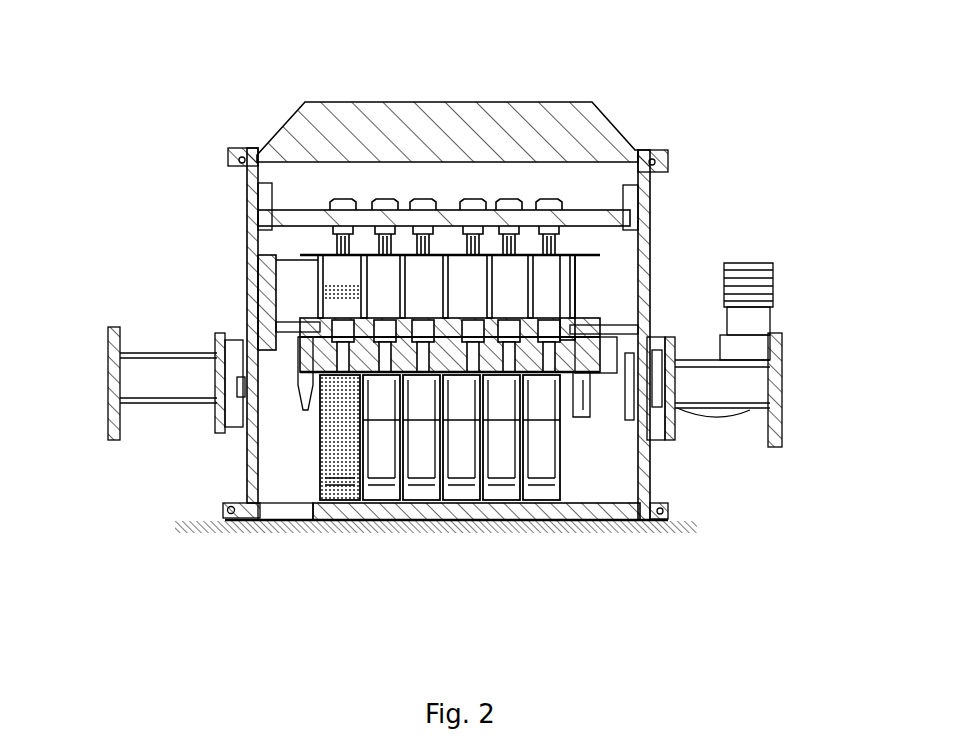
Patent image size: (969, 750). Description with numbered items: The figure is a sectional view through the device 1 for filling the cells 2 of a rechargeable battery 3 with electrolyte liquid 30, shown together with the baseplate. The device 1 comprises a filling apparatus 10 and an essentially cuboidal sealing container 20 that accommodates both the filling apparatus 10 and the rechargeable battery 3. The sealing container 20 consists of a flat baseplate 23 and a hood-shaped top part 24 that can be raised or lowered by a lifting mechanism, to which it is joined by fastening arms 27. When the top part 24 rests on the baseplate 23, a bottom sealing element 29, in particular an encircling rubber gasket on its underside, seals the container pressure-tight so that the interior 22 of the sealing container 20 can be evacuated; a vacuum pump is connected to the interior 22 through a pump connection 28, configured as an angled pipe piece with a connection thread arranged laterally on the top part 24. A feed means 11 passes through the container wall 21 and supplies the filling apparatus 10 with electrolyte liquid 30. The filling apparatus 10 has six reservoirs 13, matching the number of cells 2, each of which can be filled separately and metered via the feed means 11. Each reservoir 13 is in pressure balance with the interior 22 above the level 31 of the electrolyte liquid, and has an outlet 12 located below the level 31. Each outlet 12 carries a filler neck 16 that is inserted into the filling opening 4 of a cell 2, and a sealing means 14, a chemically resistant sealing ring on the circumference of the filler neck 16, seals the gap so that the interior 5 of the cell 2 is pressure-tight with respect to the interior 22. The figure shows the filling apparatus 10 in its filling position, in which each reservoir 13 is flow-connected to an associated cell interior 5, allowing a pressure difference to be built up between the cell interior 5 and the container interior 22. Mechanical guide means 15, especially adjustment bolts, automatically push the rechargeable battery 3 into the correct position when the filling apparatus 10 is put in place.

The device 1 is at (134, 88).
The cell 2 is at (545, 470).
The rechargeable battery 3 is at (590, 520).
The filling opening 4 is at (510, 438).
The interior of the cell 5 is at (585, 455).
The filling apparatus 10 is at (589, 247).
The feed means 11 is at (560, 222).
The outlet 12 is at (545, 312).
The reservoir 13 is at (560, 258).
The sealing means 14 is at (510, 362).
The mechanical guide means 15 is at (303, 402).
The filler neck 16 is at (522, 372).
The sealing container 20 is at (703, 149).
The container wall 21 is at (245, 205).
The interior of the sealing container 22 is at (598, 185).
The baseplate 23 is at (280, 530).
The top part 24 is at (325, 130).
The fastening arms 27 is at (170, 385).
The pump connection 28 is at (750, 292).
The bottom sealing element 29 is at (225, 525).
The electrolyte liquid 30 is at (337, 397).
The level of the electrolyte liquid 31 is at (340, 265).